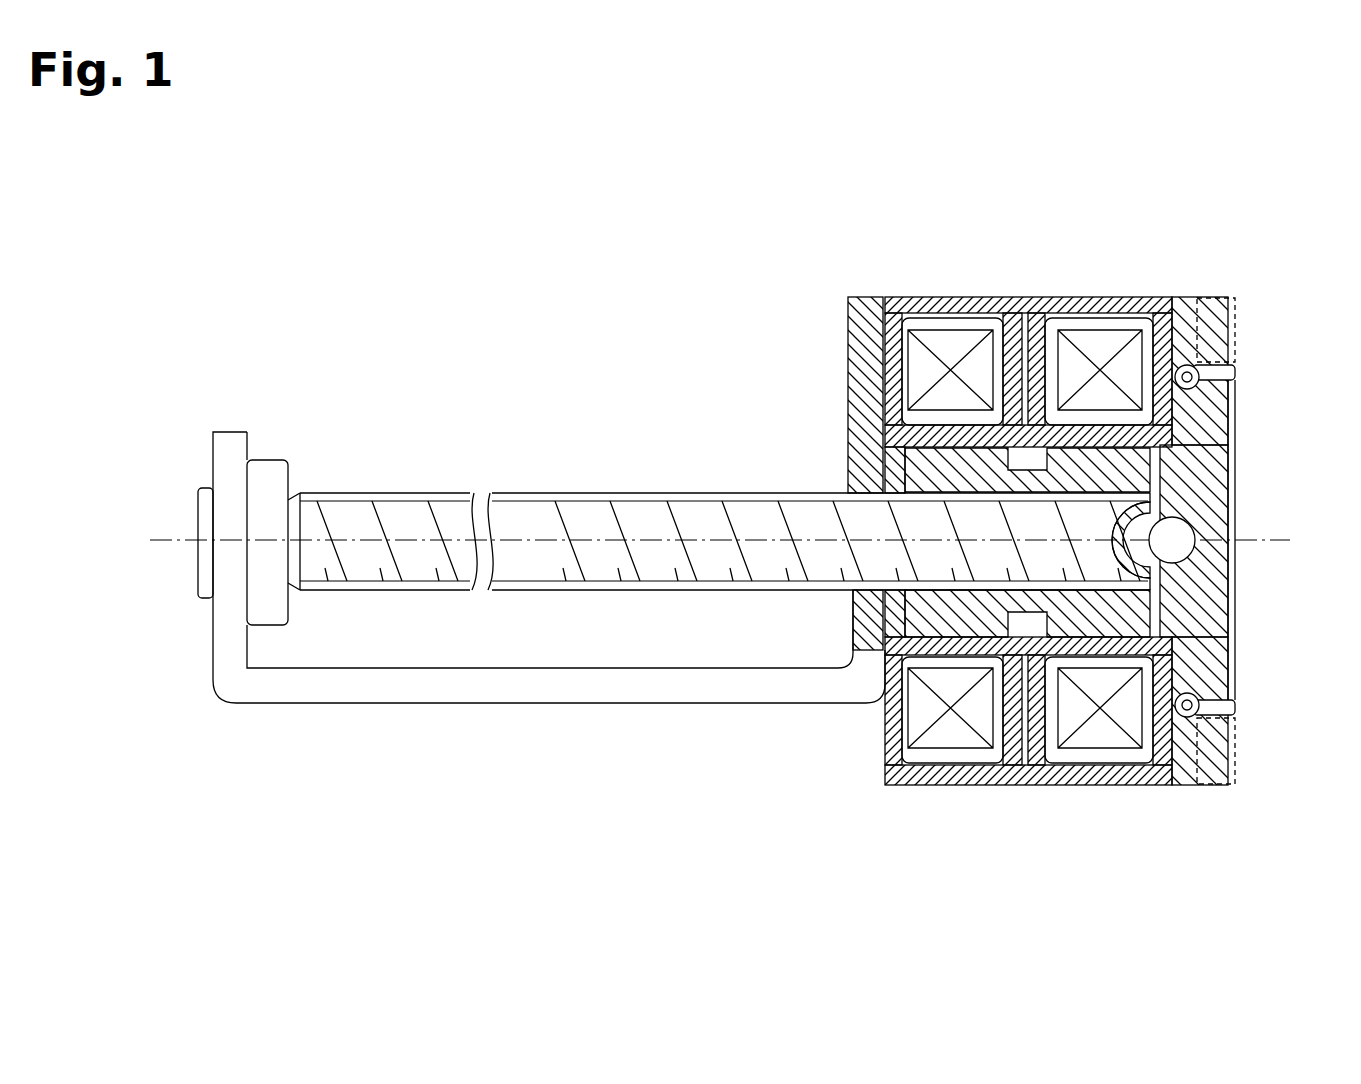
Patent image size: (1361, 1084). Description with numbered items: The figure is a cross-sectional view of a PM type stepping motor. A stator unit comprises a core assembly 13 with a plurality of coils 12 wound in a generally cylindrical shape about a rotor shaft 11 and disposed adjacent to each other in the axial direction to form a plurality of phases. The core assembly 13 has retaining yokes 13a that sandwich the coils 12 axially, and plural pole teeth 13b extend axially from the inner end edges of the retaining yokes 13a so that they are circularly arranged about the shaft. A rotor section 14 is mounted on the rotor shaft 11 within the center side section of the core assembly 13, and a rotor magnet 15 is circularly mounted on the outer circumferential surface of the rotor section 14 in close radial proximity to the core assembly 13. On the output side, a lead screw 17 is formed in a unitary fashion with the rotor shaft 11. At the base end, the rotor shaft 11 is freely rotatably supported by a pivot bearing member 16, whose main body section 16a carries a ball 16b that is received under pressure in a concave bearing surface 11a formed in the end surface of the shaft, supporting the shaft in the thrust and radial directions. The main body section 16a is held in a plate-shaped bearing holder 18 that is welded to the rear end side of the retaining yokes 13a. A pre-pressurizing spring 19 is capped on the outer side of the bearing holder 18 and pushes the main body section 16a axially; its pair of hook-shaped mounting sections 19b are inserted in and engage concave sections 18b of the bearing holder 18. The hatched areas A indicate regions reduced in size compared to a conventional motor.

The rotor shaft 11 is at (832, 377).
The bearing surface 11a is at (1237, 466).
The coils 12 is at (950, 785).
The core assembly 13 is at (1078, 297).
The retaining yokes 13a is at (865, 297).
The pole teeth 13b is at (955, 437).
The rotor section 14 is at (880, 490).
The rotor magnet 15 is at (890, 785).
The pivot bearing member 16 is at (1236, 558).
The main body section 16a is at (1240, 525).
The ball 16b is at (1240, 585).
The lead screw 17 is at (585, 492).
The bearing holder 18 is at (1205, 662).
The concave sections 18b is at (1236, 378).
The pre-pressurizing spring 19 is at (1237, 490).
The mounting sections 19b is at (1200, 345).
The areas A is at (1205, 300).